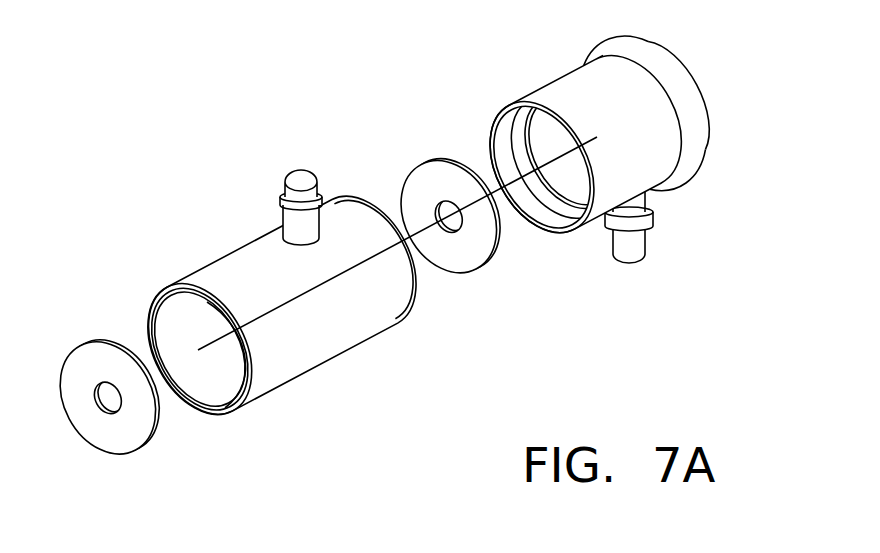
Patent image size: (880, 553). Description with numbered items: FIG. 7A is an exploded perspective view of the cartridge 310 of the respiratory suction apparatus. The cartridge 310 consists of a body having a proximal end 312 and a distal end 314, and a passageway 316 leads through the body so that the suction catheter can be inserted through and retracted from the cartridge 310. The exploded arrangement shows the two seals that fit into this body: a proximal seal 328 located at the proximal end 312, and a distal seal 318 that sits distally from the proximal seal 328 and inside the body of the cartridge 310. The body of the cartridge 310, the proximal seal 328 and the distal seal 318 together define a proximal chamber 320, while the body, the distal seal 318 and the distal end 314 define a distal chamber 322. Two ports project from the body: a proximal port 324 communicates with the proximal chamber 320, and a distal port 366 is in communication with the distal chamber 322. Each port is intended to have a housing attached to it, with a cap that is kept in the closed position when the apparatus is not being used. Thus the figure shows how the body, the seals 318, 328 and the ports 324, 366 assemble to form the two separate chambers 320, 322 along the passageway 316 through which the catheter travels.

The cartridge 310 is at (428, 277).
The proximal end 312 is at (224, 293).
The distal end 314 is at (646, 184).
The passageway 316 is at (205, 377).
The distal seal 318 is at (468, 265).
The proximal chamber 320 is at (177, 313).
The distal chamber 322 is at (545, 192).
The proximal port 324 is at (297, 171).
The proximal seal 328 is at (127, 433).
The distal port 366 is at (634, 258).